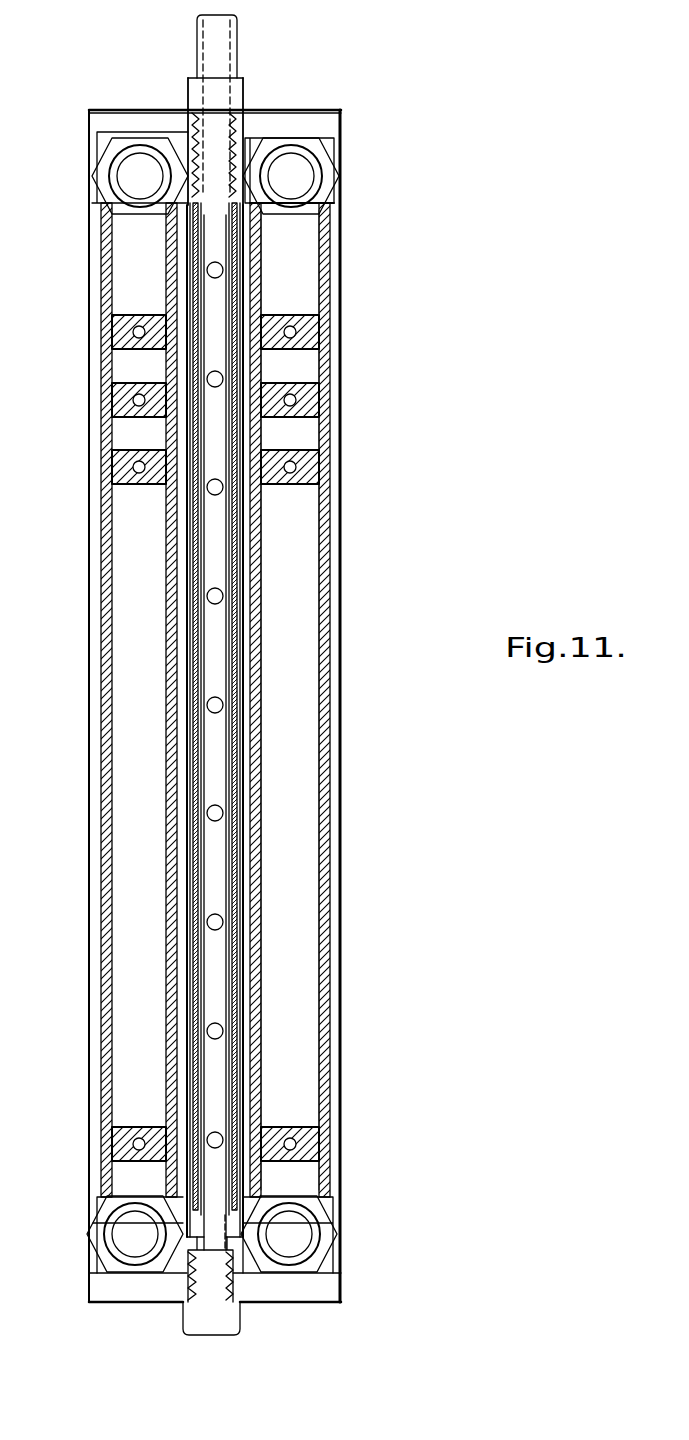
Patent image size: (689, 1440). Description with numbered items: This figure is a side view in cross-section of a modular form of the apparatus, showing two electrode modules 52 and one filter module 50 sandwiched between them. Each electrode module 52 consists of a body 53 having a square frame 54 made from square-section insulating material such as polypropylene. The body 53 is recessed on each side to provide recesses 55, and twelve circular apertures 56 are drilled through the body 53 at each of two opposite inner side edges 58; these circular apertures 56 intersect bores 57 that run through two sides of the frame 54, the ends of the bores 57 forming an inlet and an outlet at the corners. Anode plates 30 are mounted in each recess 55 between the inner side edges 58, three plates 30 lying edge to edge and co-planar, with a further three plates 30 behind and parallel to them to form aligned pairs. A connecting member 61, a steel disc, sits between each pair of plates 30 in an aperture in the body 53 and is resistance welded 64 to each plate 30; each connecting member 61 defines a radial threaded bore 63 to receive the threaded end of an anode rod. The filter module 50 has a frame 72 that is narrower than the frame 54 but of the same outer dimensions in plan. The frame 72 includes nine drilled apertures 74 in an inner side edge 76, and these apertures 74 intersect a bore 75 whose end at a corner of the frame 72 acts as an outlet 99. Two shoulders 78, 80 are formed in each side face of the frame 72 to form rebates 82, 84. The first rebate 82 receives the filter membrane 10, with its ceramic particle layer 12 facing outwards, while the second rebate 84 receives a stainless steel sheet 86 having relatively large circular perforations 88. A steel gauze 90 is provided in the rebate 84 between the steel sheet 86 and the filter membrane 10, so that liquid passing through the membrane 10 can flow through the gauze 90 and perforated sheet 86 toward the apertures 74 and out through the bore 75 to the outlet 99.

The filter membrane 10 is at (232, 850).
The ceramic particle layer 12 is at (242, 892).
The anode plates 30 is at (325, 743).
The filter module 50 is at (236, 1320).
The electrode module 52 is at (302, 1288).
The body 53 is at (300, 650).
The square frame 54 is at (340, 1285).
The recesses 55 is at (330, 215).
The circular apertures 56 is at (287, 1222).
The bores 57 is at (287, 1238).
The inner side edges 58 is at (323, 203).
The connecting member 61 is at (315, 404).
The threaded bore 63 is at (297, 418).
The resistance weld 64 is at (290, 312).
The frame 72 is at (187, 1280).
The drilled apertures 74 is at (232, 1035).
The bore 75 is at (220, 125).
The inner side edge 76 is at (218, 1088).
The shoulder 78 is at (230, 196).
The shoulder 80 is at (190, 168).
The first rebate 82 is at (245, 182).
The second rebate 84 is at (232, 230).
The stainless steel sheet 86 is at (233, 962).
The circular perforations 88 is at (232, 1000).
The steel gauze 90 is at (245, 912).
The outlet 99 is at (222, 38).